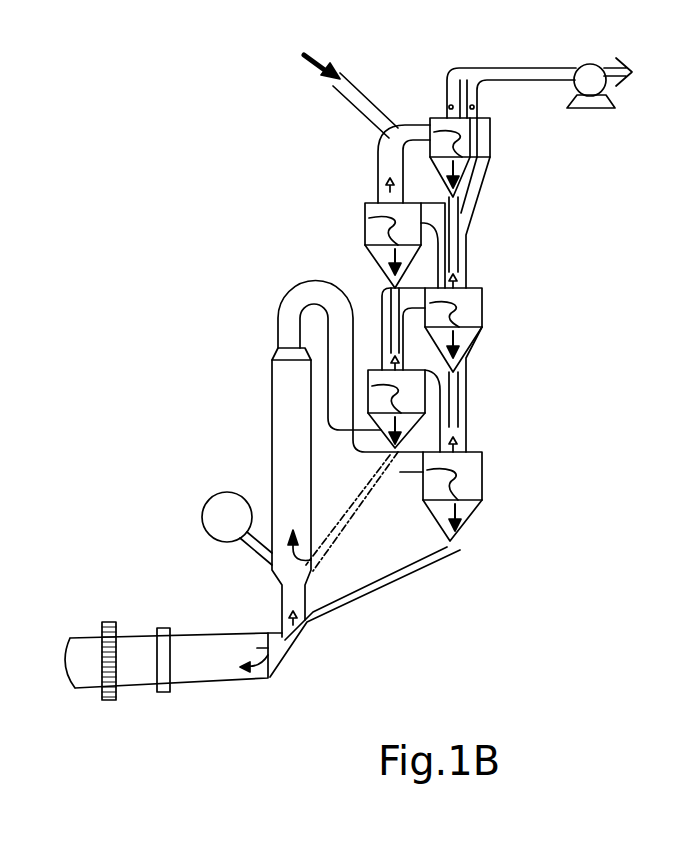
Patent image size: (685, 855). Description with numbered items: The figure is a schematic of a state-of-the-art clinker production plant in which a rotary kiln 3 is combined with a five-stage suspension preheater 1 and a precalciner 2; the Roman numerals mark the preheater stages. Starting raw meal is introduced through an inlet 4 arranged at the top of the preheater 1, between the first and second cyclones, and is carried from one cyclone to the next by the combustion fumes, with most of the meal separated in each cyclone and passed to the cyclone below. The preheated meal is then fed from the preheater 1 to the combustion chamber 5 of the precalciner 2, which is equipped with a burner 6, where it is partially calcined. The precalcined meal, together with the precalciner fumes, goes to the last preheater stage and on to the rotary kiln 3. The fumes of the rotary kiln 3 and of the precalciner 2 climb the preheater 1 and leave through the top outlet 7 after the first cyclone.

The preheater 1 is at (506, 298).
The precalciner 2 is at (246, 368).
The rotary kiln 3 is at (215, 610).
The inlet 4 is at (358, 99).
The combustion chamber 5 is at (264, 443).
The burner 6 is at (215, 518).
The top outlet 7 is at (549, 88).